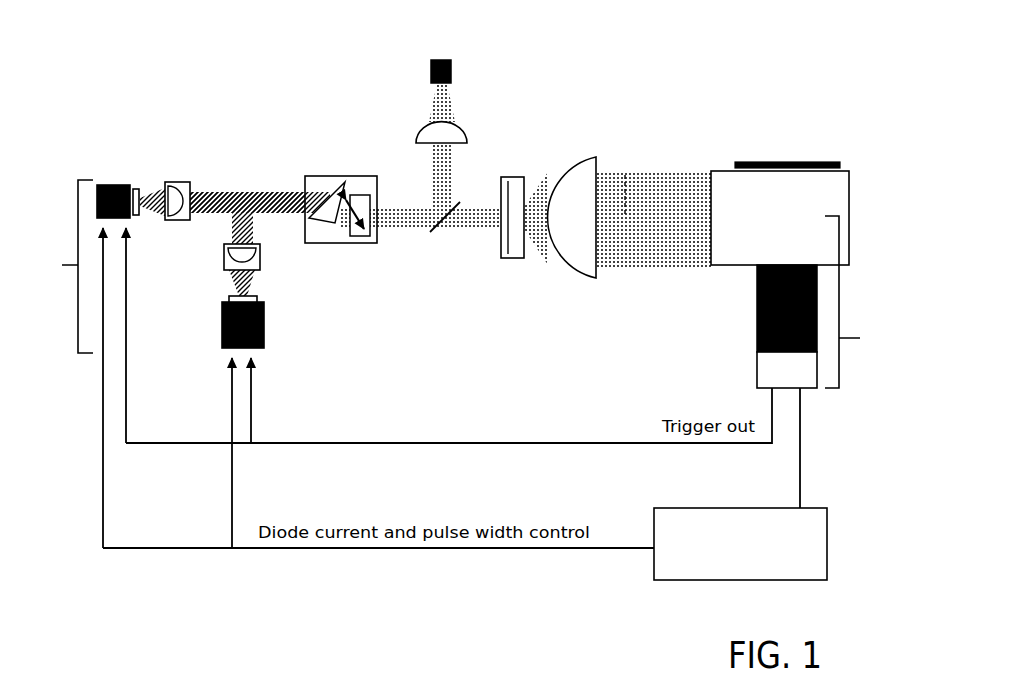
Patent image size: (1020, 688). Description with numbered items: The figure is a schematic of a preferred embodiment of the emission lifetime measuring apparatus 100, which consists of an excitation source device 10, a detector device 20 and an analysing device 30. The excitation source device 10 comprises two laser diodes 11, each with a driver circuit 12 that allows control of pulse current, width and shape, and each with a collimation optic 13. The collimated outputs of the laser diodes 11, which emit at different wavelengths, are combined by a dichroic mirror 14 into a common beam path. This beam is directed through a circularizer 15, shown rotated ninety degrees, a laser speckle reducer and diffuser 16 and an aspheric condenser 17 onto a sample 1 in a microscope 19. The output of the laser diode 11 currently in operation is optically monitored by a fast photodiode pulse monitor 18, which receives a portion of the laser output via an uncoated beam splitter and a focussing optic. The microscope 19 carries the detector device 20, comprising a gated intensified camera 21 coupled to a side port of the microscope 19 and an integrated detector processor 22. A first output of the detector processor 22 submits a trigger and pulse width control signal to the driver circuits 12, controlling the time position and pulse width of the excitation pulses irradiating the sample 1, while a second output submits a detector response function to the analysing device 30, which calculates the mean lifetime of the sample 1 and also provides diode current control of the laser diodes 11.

The emission lifetime measuring apparatus 100 is at (172, 75).
The excitation source device 10 is at (58, 282).
The laser diode 11 is at (115, 185).
The driver circuit 12 is at (137, 189).
The collimation optic 13 is at (181, 187).
The dichroic mirror 14 is at (247, 197).
The circularizer 15 is at (347, 237).
The laser speckle reducer and diffuser 16 is at (505, 254).
The aspheric condenser 17 is at (580, 265).
The fast photodiode pulse monitor 18 is at (432, 72).
The microscope 19 is at (722, 180).
The sample 1 is at (765, 162).
The detector device 20 is at (890, 354).
The gated intensified camera 21 is at (757, 288).
The detector processor 22 is at (768, 360).
The analysing device 30 is at (715, 518).